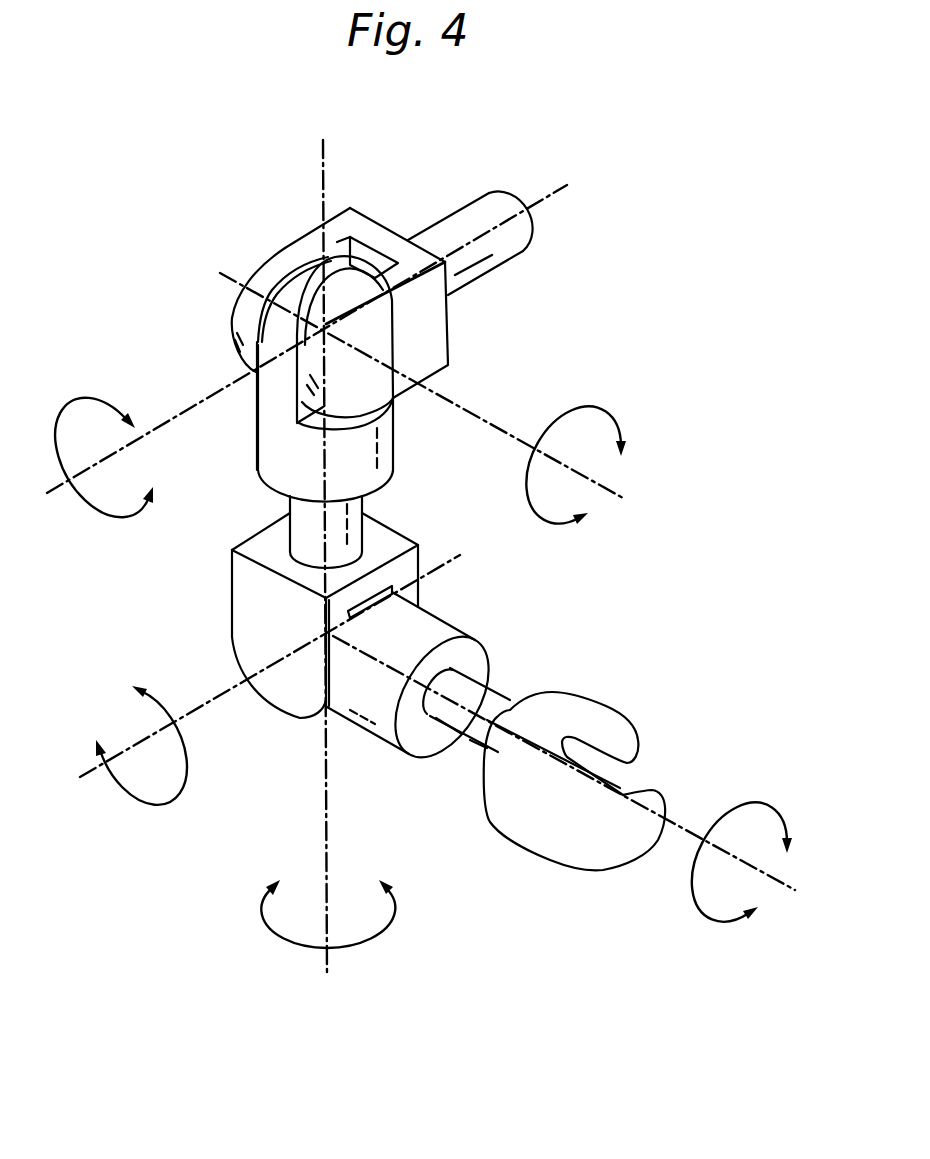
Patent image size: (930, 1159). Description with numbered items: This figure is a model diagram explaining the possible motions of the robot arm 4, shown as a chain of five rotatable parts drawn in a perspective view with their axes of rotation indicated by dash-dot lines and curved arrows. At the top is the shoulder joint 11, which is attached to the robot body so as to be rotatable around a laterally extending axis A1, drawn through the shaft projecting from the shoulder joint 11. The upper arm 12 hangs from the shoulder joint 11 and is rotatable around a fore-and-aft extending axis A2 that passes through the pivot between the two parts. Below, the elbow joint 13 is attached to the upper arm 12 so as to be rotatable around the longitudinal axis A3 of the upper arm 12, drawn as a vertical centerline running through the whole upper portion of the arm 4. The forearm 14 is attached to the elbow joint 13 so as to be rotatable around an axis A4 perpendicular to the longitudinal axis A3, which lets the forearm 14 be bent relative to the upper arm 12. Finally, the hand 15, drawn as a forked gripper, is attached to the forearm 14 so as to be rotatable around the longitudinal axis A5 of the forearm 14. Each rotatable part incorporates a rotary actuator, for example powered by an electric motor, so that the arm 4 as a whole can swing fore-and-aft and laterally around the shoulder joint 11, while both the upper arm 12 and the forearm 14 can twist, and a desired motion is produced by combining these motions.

The arm 4 is at (533, 626).
The shoulder joint 11 is at (283, 252).
The upper arm 12 is at (263, 432).
The elbow joint 13 is at (236, 635).
The forearm 14 is at (372, 737).
The hand 15 is at (532, 838).
The laterally extending axis A1 is at (538, 208).
The fore-and-aft extending axis A2 is at (612, 488).
The longitudinal axis of the upper arm A3 is at (327, 827).
The axis perpendicular to the longitudinal axis of the upper arm A4 is at (96, 770).
The longitudinal axis of the forearm A5 is at (678, 827).